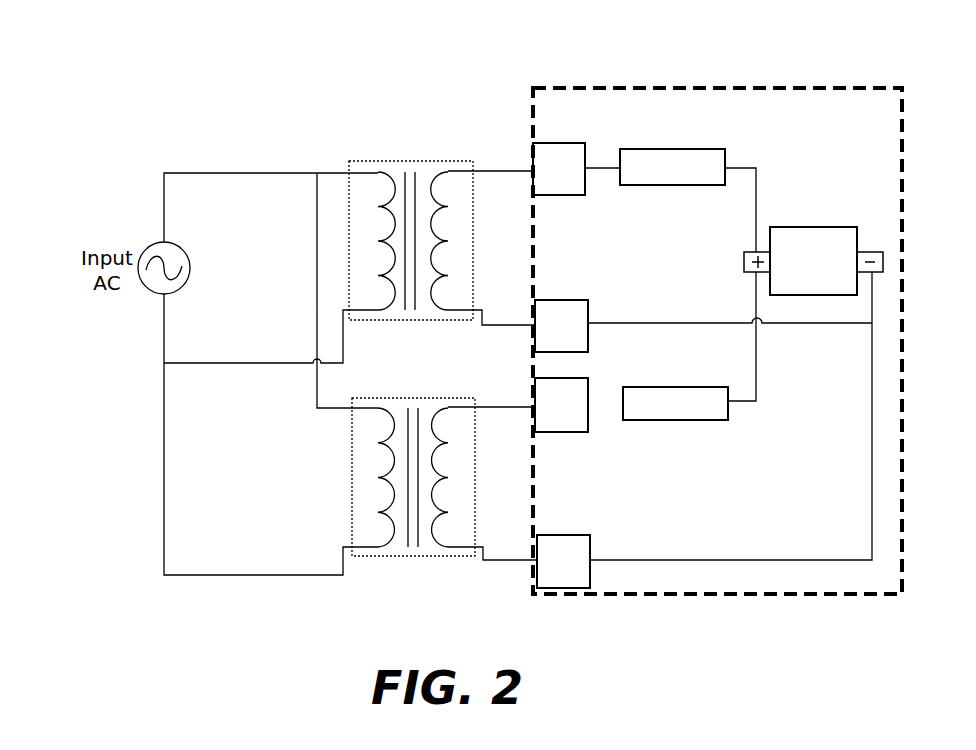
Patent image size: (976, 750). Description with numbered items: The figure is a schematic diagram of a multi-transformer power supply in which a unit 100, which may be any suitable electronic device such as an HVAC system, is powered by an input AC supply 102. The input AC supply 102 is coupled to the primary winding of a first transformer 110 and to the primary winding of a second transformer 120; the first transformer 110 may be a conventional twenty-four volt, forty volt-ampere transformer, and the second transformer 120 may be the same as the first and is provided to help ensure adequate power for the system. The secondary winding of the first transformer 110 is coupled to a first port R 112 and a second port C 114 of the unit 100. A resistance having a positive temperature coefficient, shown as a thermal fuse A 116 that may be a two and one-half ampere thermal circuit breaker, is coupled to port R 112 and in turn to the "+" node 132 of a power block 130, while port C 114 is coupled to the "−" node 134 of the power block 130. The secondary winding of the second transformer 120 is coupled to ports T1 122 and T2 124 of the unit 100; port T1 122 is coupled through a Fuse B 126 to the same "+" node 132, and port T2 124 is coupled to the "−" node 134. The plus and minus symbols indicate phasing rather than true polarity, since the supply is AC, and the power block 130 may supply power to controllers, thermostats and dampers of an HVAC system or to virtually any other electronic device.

The unit 100 is at (634, 88).
The input AC supply 102 is at (150, 250).
The first transformer 110 is at (392, 161).
The first port R 112 is at (548, 143).
The second port C 114 is at (535, 333).
The thermal fuse A 116 is at (680, 186).
The second transformer 120 is at (415, 557).
The port T1 122 is at (535, 388).
The port T2 124 is at (542, 594).
The Fuse B 126 is at (688, 420).
The power block 130 is at (798, 227).
The "+" node 132 is at (744, 256).
The "−" node 134 is at (872, 252).